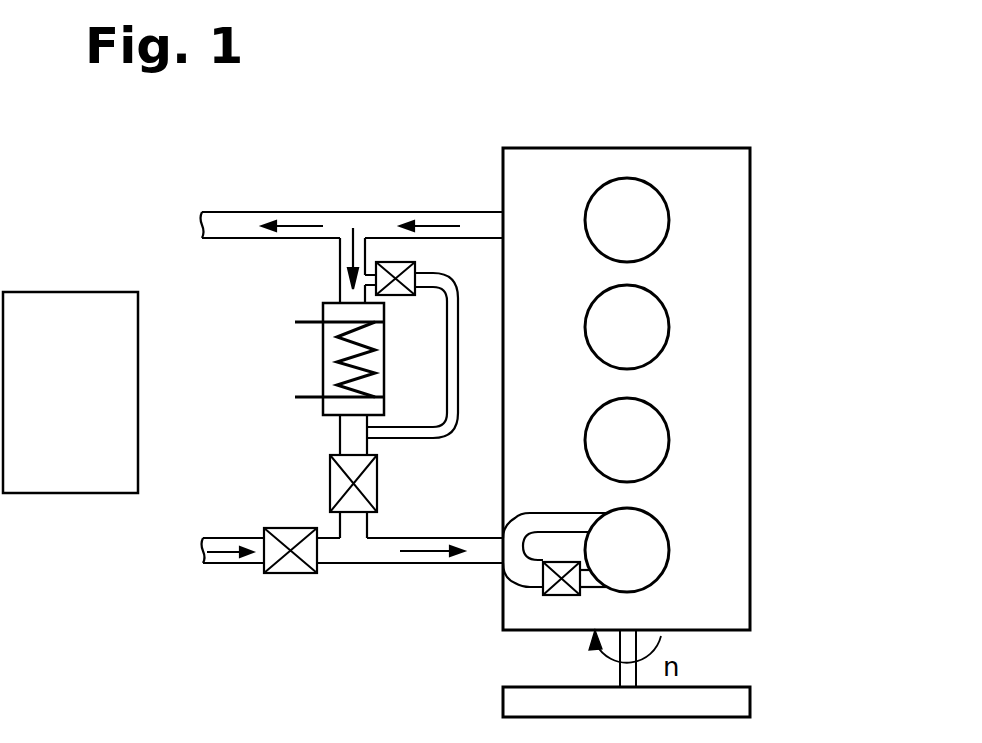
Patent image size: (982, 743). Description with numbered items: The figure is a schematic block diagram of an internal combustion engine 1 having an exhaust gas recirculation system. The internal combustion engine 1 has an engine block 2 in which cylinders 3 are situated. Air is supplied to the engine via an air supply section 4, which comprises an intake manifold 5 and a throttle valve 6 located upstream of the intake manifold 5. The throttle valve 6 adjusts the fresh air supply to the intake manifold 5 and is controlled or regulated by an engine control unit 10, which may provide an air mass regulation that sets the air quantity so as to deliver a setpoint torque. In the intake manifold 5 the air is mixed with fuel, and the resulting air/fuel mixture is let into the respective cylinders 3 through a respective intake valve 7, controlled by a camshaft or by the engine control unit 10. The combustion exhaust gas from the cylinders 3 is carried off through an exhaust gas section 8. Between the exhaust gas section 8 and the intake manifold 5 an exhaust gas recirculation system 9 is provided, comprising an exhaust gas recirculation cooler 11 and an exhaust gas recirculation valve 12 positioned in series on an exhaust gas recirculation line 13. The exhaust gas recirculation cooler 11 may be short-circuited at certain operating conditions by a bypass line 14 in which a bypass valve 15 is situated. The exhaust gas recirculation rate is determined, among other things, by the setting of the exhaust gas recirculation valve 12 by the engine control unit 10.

The internal combustion engine 1 is at (812, 136).
The engine block 2 is at (690, 386).
The cylinders 3 is at (635, 222).
The air supply section 4 is at (488, 618).
The intake manifold 5 is at (390, 550).
The throttle valve 6 is at (292, 574).
The intake valve 7 is at (562, 597).
The exhaust gas section 8 is at (500, 196).
The exhaust gas recirculation system 9 is at (272, 257).
The engine control unit 10 is at (86, 407).
The exhaust gas recirculation cooler 11 is at (322, 366).
The exhaust gas recirculation valve 12 is at (378, 483).
The exhaust gas recirculation line 13 is at (347, 255).
The bypass line 14 is at (460, 357).
The bypass valve 15 is at (418, 266).